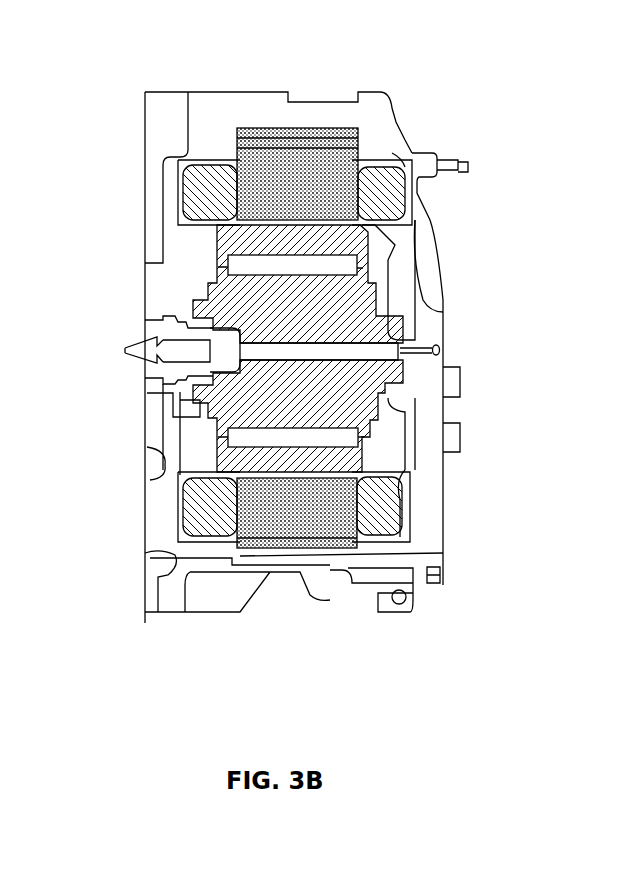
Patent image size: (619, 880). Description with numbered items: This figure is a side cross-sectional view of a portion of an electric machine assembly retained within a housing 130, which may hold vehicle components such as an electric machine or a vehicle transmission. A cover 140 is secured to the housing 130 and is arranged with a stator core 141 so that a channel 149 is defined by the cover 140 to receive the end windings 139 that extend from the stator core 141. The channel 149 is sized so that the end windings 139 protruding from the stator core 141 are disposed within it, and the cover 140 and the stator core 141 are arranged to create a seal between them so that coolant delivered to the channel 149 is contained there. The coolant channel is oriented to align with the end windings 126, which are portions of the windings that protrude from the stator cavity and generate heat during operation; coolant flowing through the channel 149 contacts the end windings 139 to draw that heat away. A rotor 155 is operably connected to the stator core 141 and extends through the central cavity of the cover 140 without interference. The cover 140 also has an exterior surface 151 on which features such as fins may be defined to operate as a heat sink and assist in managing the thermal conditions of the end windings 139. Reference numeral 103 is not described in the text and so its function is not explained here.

The housing 130 is at (205, 92).
The stator core 141 is at (293, 172).
The end windings 139 is at (193, 195).
The channel 149 is at (172, 212).
The end windings 126 is at (398, 193).
The rotor 103 is at (383, 238).
The cover 140 is at (438, 306).
The exterior surface 151 is at (445, 338).
The rotor 155 is at (160, 378).